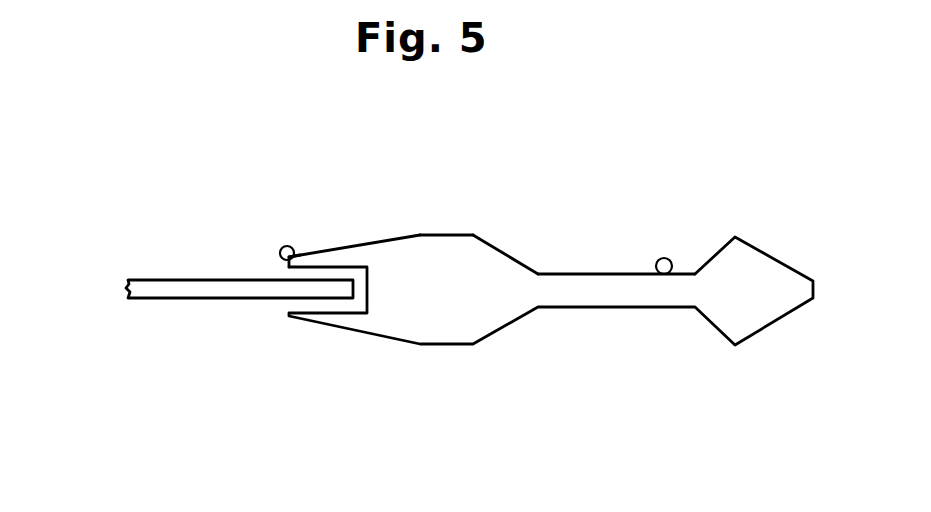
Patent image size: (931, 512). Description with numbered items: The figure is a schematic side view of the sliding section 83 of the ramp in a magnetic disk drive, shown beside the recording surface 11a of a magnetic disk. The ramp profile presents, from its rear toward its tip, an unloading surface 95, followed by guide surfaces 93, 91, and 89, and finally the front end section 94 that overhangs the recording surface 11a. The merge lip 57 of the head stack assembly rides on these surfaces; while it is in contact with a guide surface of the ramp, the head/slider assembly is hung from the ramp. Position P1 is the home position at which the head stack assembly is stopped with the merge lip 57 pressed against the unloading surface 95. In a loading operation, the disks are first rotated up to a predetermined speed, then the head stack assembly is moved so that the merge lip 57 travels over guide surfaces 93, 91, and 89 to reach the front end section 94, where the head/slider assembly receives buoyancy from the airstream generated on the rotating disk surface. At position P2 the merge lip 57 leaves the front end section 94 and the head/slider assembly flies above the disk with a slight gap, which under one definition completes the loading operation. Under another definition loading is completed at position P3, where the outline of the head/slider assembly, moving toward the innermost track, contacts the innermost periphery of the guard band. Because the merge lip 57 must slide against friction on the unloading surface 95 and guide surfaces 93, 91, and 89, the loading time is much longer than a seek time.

The recording surface 11a is at (167, 280).
The sliding section 83 is at (500, 308).
The front end section 94 is at (281, 258).
The guide surface 89 is at (371, 243).
The guide surface 91 is at (437, 235).
The guide surface 93 is at (502, 252).
The unloading surface 95 is at (588, 274).
The merge lip 57 is at (293, 247).
The home position P1 is at (663, 224).
The position P2 is at (289, 216).
The position P3 is at (272, 216).